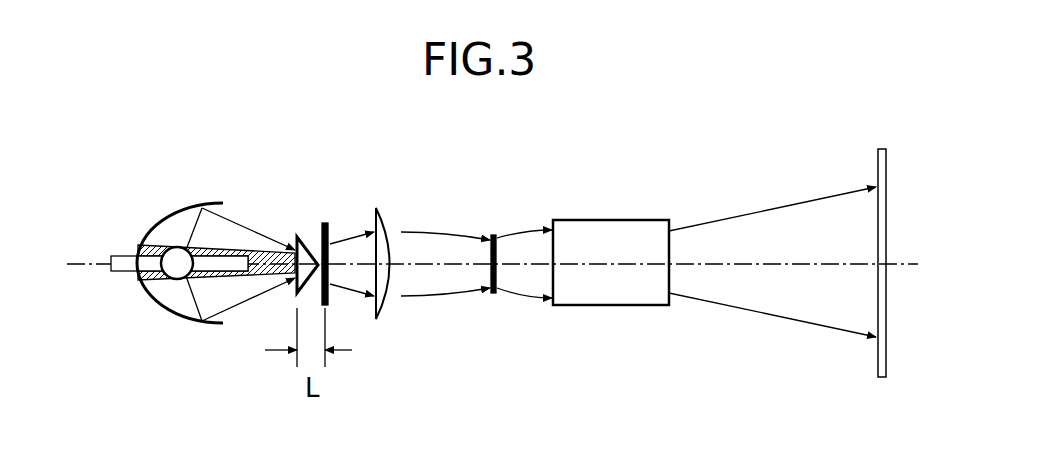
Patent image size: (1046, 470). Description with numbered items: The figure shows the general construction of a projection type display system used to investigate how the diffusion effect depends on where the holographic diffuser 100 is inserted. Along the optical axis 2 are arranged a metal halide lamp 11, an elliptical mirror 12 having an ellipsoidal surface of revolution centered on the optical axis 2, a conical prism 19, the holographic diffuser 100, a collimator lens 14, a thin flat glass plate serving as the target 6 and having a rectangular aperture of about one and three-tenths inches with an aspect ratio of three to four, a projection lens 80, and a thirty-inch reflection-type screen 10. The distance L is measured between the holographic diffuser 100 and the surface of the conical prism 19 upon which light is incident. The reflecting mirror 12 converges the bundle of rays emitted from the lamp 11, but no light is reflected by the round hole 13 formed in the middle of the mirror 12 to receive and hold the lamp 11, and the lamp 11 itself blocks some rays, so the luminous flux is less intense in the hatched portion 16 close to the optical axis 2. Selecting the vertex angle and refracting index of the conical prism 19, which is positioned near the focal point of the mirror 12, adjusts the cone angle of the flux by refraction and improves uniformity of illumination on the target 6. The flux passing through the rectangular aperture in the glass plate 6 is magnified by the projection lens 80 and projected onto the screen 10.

The optical axis 2 is at (92, 262).
The metal halide lamp 11 is at (177, 248).
The elliptical mirror 12 is at (173, 317).
The round hole 13 is at (134, 280).
The hatched portion 16 is at (138, 243).
The conical prism 19 is at (299, 235).
The holographic diffuser 100 is at (330, 222).
The collimator lens 14 is at (385, 318).
The target 6 is at (493, 233).
The projection lens 80 is at (605, 306).
The reflection-type screen 10 is at (878, 367).